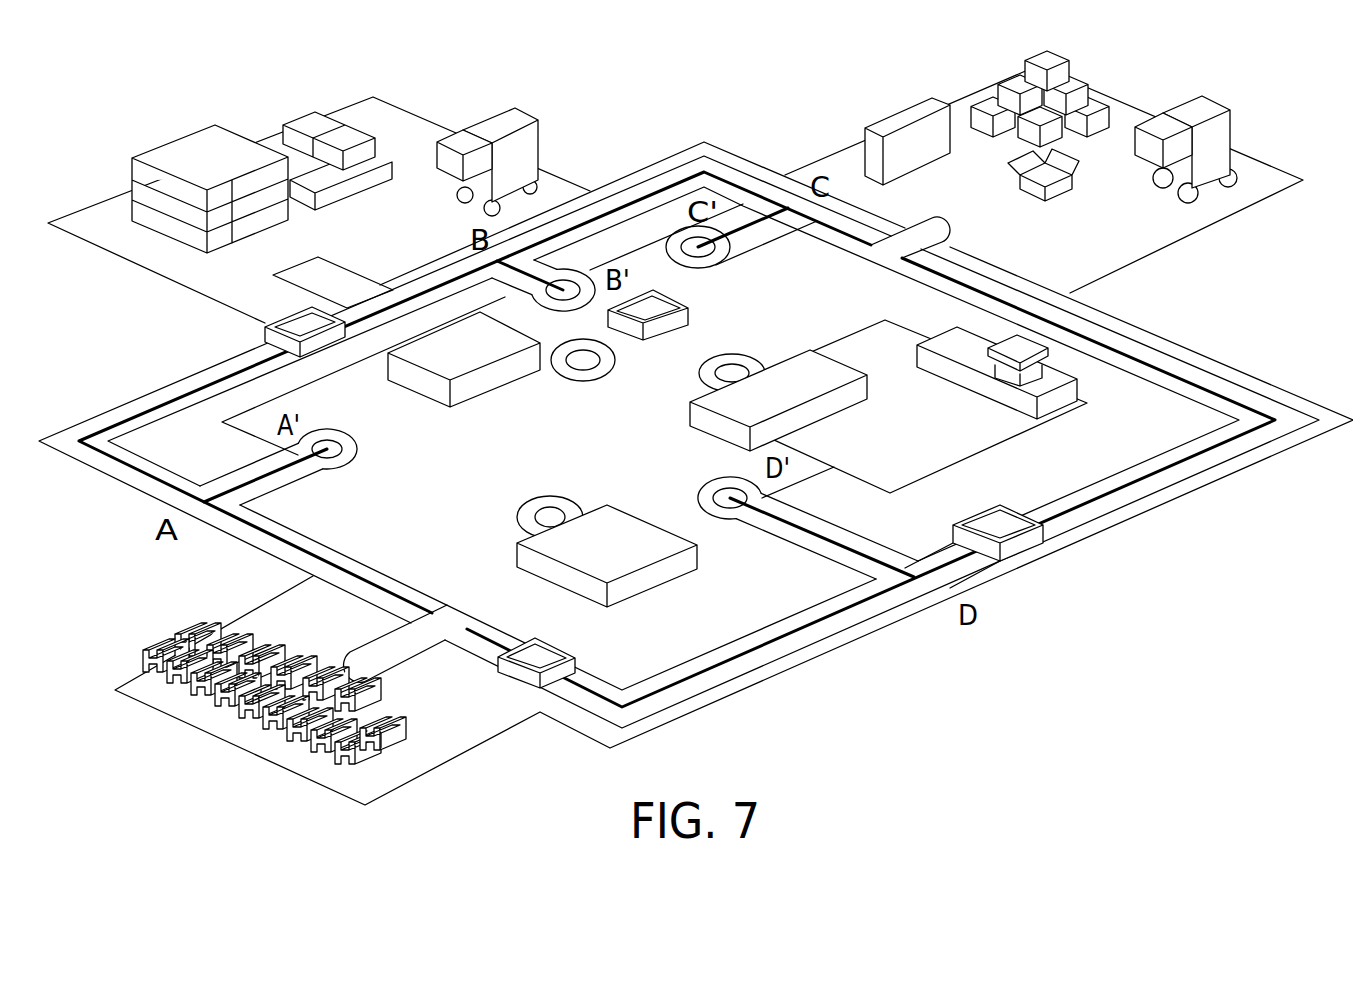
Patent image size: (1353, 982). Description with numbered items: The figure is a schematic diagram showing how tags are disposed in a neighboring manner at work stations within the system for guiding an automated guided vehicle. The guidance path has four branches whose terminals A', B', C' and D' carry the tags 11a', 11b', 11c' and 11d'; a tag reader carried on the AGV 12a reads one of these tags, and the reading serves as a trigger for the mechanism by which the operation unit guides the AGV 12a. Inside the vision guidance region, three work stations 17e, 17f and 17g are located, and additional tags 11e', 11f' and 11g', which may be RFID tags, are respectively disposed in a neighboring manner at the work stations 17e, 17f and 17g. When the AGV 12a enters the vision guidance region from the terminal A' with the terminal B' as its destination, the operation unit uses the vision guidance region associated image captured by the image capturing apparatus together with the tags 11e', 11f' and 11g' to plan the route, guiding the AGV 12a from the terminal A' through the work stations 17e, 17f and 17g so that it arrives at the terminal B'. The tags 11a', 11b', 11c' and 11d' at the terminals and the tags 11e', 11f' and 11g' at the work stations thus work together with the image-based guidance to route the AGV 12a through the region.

The tag 11a' is at (321, 467).
The tag 11b' is at (500, 267).
The tag 11c' is at (744, 240).
The tag 11d' is at (808, 528).
The tag 11e' is at (583, 388).
The tag 11f' is at (732, 350).
The tag 11g' is at (536, 484).
The automated guided vehicle 12a is at (655, 290).
The work station 17e is at (417, 378).
The work station 17f is at (722, 428).
The work station 17g is at (560, 575).